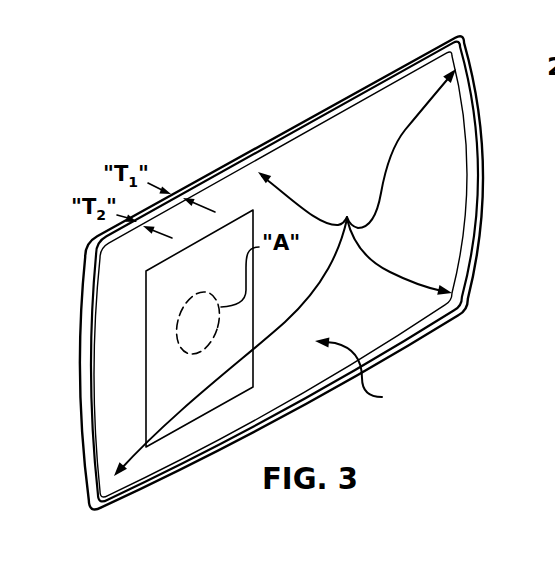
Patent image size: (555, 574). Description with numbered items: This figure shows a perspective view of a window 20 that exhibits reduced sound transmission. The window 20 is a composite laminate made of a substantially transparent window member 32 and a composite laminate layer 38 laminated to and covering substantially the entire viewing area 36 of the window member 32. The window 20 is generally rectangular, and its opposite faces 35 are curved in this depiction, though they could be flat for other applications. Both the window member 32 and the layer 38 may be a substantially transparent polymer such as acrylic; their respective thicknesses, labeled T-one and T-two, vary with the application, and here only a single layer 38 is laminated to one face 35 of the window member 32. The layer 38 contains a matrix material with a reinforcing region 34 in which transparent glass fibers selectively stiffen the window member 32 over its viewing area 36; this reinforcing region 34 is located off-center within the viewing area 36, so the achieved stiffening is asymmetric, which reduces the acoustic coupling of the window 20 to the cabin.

The window 20 is at (191, 135).
The window member 32 is at (323, 110).
The composite laminate layer 38 is at (281, 137).
The reinforcing region 34 is at (189, 403).
The viewing area 36 is at (285, 272).
The face 35 is at (360, 373).